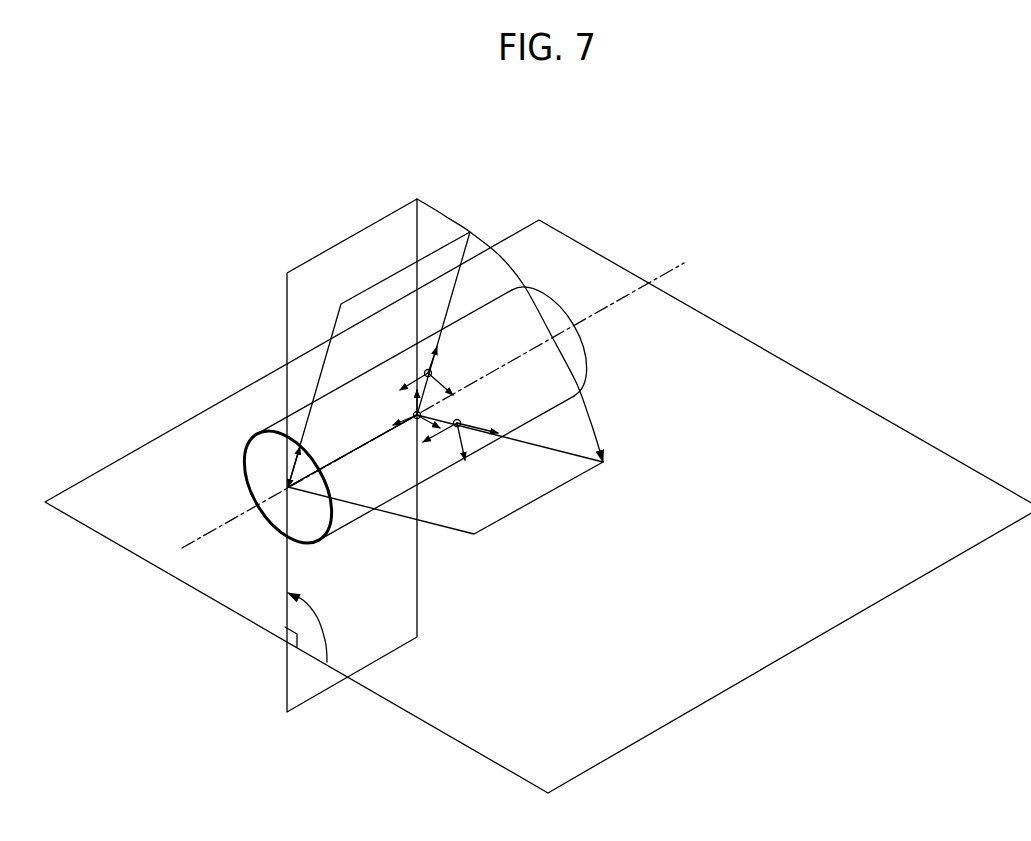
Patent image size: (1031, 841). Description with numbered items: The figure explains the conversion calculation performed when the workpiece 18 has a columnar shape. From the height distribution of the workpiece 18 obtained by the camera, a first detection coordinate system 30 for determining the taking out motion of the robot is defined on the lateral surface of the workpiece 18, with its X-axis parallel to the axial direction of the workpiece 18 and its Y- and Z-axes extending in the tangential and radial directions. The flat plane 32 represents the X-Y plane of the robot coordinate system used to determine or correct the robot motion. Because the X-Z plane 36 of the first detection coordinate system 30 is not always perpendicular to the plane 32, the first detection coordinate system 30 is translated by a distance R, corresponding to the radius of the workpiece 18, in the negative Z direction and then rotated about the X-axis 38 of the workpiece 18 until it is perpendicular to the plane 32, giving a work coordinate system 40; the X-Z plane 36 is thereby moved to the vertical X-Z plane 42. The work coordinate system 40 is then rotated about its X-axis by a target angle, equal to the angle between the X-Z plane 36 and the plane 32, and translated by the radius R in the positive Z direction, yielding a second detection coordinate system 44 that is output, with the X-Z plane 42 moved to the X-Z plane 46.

The workpiece 18 is at (265, 505).
The first detection coordinate system 30 is at (420, 366).
The X-Y plane of the robot coordinate system 32 is at (695, 678).
The X-Z plane of the first coordinate system 36 is at (440, 260).
The X-axis of the workpiece 38 is at (255, 509).
The work coordinate system 40 is at (392, 395).
The X-Z plane 42 is at (345, 267).
The second detection coordinate system 44 is at (477, 407).
The X-Z plane 46 is at (470, 517).
The radius of the workpiece R is at (293, 464).